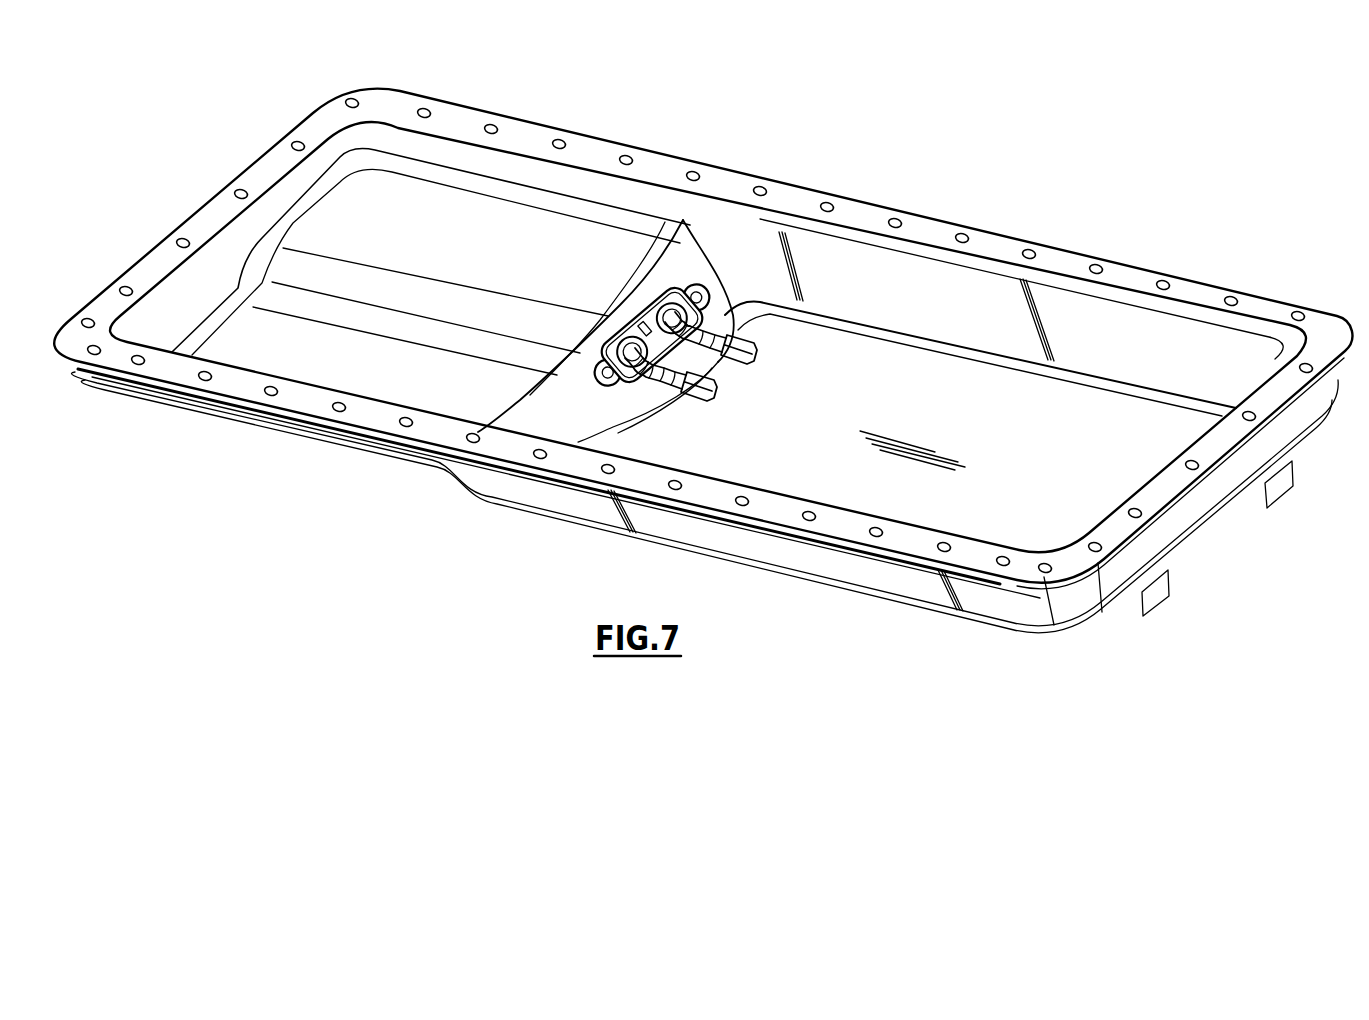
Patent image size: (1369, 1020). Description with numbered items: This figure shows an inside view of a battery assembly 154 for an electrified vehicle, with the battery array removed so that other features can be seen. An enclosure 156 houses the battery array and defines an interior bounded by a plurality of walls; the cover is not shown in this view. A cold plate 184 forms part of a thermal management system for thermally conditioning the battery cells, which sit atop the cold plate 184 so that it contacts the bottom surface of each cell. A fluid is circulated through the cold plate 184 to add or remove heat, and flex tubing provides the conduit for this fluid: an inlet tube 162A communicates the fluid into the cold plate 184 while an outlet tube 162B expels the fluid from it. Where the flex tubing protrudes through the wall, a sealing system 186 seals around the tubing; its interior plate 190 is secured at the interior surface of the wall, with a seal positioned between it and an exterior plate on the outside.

The battery assembly 154 is at (703, 358).
The enclosure 156 is at (703, 361).
The inlet tube 162A is at (650, 390).
The outlet tube 162B is at (703, 330).
The cold plate 184 is at (1062, 403).
The sealing system 186 is at (675, 314).
The interior plate 190 is at (669, 292).